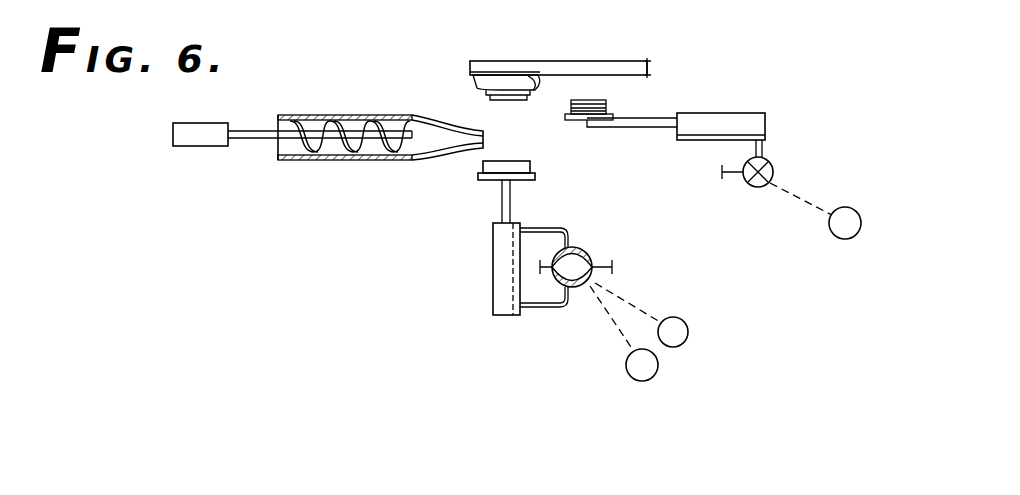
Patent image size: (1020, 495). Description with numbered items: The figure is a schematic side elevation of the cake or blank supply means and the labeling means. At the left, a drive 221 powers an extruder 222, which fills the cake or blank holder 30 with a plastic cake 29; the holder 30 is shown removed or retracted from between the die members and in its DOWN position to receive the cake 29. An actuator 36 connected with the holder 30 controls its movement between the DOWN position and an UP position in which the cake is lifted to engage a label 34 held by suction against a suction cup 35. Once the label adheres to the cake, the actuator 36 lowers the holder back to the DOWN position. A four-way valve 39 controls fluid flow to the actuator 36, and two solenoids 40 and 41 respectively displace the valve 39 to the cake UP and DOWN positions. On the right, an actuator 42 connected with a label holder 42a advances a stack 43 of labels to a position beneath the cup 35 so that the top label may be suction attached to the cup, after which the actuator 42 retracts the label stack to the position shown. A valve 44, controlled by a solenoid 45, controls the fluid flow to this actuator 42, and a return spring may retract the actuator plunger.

The drive 221 is at (203, 147).
The extruder 222 is at (330, 162).
The suction cup 35 is at (478, 80).
The label 34 is at (500, 97).
The stack of labels 43 is at (593, 100).
The label holder 42a is at (620, 115).
The actuator 42 is at (728, 122).
The valve 44 is at (773, 174).
The solenoid 45 is at (845, 240).
The cake 29 is at (518, 171).
The cake or blank holder 30 is at (481, 178).
The actuator 36 is at (498, 270).
The four-way valve 39 is at (590, 250).
The solenoid 41 is at (690, 332).
The solenoid 40 is at (634, 380).